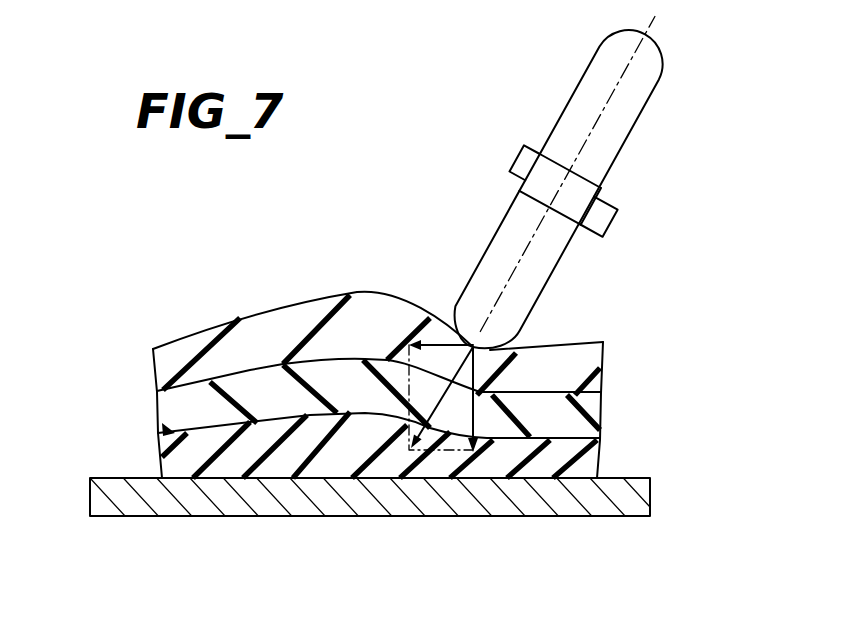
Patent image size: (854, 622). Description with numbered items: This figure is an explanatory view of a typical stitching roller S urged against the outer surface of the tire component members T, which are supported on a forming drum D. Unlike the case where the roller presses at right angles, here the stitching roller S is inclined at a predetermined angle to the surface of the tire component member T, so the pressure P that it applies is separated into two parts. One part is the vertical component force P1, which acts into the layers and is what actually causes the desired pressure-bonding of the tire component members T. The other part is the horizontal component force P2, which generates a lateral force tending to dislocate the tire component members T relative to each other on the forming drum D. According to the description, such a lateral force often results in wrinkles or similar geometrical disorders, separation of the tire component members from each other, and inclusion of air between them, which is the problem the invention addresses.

The stitching roller S is at (561, 115).
The tire component members T is at (163, 453).
The forming drum D is at (273, 506).
The pressure P is at (445, 398).
The vertical component force P1 is at (473, 415).
The horizontal component force P2 is at (445, 345).